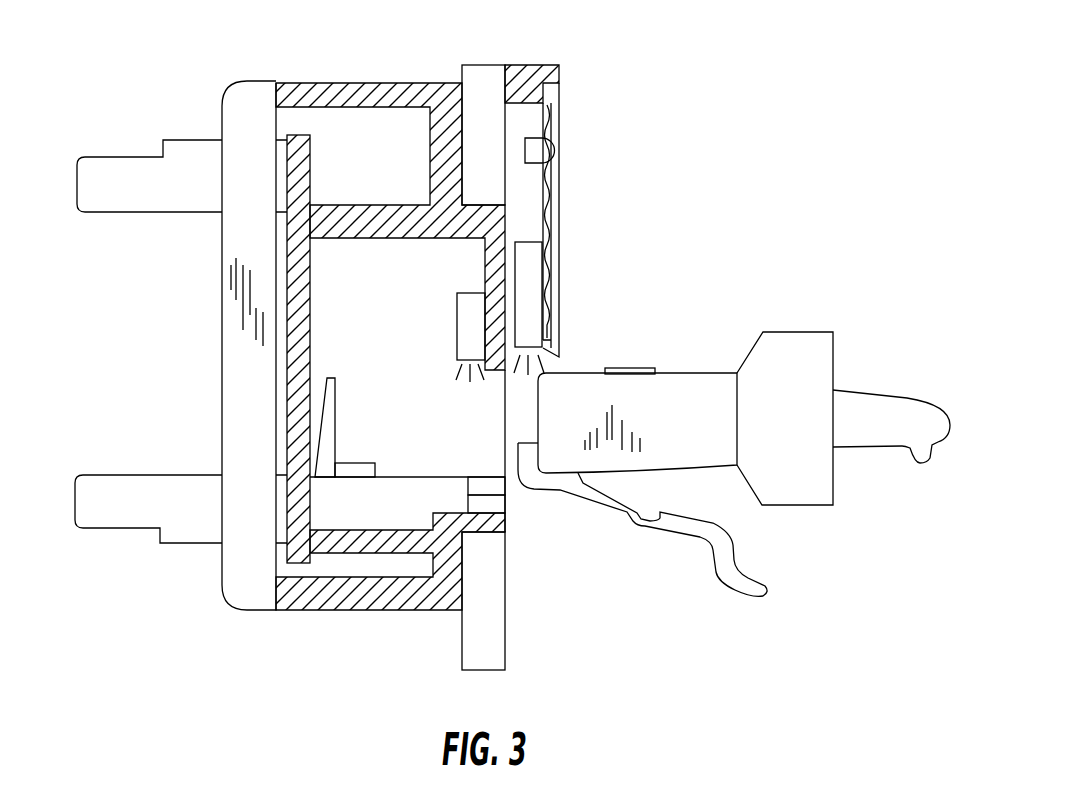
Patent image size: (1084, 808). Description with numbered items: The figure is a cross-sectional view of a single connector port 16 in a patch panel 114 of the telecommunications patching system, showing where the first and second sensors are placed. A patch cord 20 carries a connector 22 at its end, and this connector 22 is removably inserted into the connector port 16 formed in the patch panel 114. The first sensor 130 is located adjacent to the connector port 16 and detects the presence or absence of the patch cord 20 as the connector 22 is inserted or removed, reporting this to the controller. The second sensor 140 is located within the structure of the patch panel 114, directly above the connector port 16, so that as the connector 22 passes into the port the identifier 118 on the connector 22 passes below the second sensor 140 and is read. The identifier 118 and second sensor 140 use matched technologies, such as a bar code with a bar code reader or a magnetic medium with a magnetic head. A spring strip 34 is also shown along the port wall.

The patch panel 114 is at (395, 77).
The telecommunication connector port 16 is at (465, 457).
The spring contact strip 34 is at (556, 192).
The first sensor 130 is at (530, 295).
The second sensor 140 is at (467, 317).
The connector 22 is at (675, 373).
The identifier 118 is at (622, 363).
The patch cord 20 is at (888, 392).